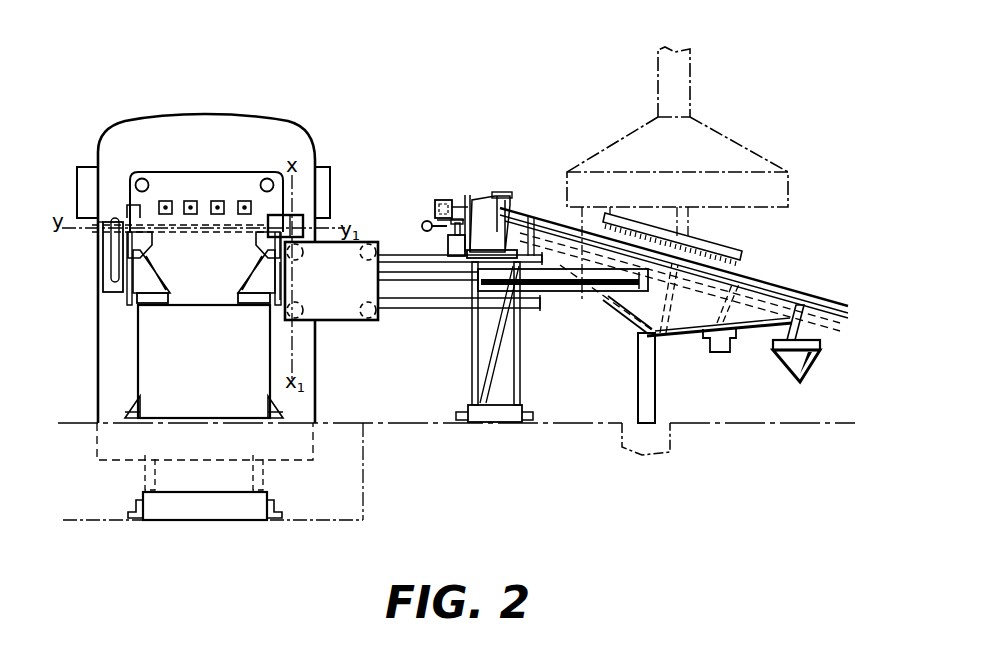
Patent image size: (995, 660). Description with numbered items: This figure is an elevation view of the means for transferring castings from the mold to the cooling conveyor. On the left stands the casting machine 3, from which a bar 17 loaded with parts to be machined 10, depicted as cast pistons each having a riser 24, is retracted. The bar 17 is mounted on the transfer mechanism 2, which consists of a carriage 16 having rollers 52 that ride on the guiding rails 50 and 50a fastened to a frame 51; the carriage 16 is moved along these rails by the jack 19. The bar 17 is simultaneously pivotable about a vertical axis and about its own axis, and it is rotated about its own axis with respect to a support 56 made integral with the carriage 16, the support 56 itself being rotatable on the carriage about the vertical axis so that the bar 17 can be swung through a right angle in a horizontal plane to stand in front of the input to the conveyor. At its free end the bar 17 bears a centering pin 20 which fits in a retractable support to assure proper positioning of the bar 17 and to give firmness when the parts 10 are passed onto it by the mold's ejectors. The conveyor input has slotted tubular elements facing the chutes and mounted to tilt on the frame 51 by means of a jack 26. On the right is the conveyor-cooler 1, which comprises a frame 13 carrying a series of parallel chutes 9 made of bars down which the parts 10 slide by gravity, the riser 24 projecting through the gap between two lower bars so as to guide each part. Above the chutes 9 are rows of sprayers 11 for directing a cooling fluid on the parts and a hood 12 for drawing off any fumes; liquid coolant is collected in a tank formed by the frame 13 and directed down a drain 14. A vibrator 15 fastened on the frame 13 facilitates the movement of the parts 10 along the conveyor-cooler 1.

The conveyor-cooler 1 is at (694, 312).
The transfer mechanism 2 is at (410, 284).
The casting machine 3 is at (211, 279).
The chute 9 is at (806, 290).
The parts to be machined 10 is at (217, 199).
The sprayers 11 is at (742, 246).
The hood 12 is at (727, 157).
The frame 13 is at (662, 338).
The drain 14 is at (667, 440).
The vibrator 15 is at (730, 343).
The carriage 16 is at (335, 290).
The bar 17 is at (196, 234).
The jack 19 is at (552, 292).
The centering pin 20 is at (136, 211).
The riser 24 is at (441, 198).
The jack 26 is at (447, 245).
The guiding rail 50 is at (398, 262).
The guiding rail 50a is at (418, 309).
The frame 51 is at (520, 370).
The rollers 52 is at (374, 248).
The support 56 is at (303, 222).